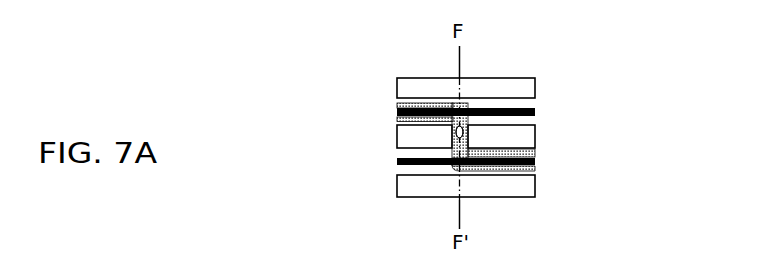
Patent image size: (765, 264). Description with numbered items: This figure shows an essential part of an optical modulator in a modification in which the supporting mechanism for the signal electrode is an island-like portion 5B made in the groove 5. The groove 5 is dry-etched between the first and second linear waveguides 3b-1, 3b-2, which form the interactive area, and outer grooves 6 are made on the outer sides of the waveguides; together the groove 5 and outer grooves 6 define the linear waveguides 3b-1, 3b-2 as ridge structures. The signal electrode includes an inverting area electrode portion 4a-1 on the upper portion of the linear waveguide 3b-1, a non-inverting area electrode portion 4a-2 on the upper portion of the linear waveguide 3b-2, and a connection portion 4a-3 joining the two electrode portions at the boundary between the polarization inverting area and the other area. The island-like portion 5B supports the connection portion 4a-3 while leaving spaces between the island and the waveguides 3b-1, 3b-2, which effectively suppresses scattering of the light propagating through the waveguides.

The outer groove 6 is at (501, 83).
The inverting area electrode portion 4a-1 is at (424, 103).
The connection portion 4a-3 is at (468, 136).
The linear waveguide 3b-1 is at (535, 112).
The groove 5 is at (535, 140).
The island-like portion 5B is at (452, 133).
The linear waveguide 3b-2 is at (397, 161).
The non-inverting area electrode portion 4a-2 is at (497, 170).